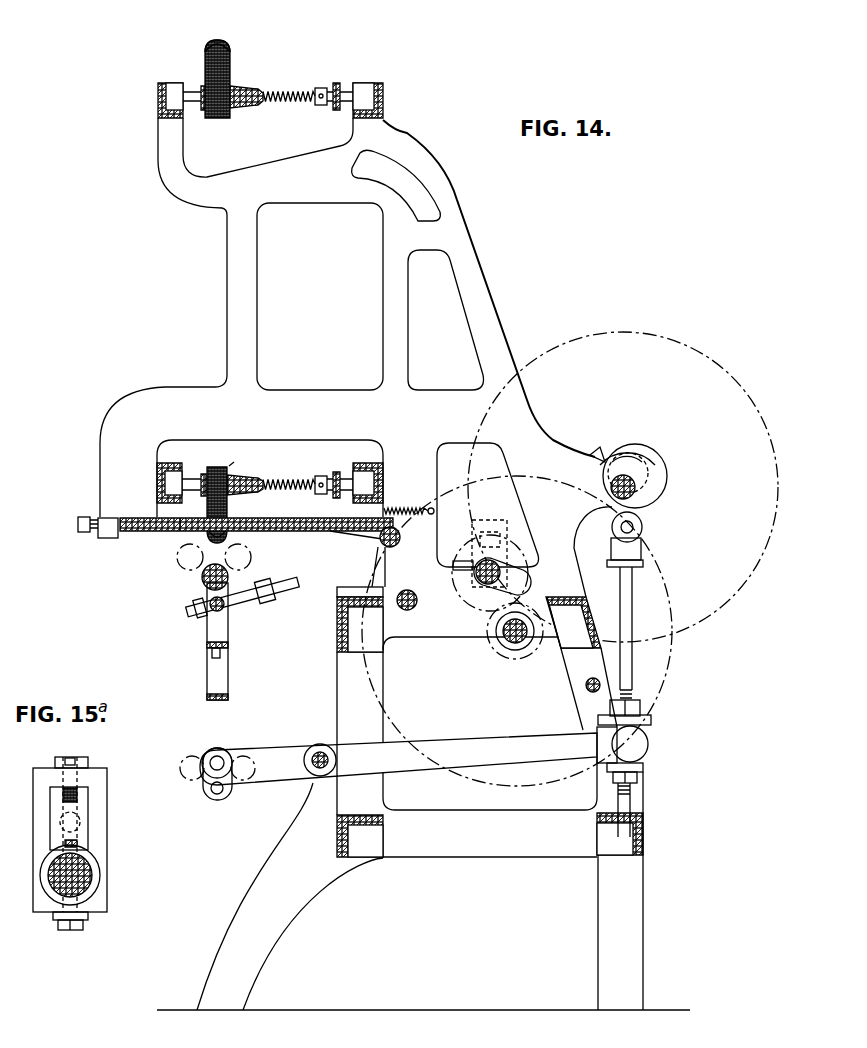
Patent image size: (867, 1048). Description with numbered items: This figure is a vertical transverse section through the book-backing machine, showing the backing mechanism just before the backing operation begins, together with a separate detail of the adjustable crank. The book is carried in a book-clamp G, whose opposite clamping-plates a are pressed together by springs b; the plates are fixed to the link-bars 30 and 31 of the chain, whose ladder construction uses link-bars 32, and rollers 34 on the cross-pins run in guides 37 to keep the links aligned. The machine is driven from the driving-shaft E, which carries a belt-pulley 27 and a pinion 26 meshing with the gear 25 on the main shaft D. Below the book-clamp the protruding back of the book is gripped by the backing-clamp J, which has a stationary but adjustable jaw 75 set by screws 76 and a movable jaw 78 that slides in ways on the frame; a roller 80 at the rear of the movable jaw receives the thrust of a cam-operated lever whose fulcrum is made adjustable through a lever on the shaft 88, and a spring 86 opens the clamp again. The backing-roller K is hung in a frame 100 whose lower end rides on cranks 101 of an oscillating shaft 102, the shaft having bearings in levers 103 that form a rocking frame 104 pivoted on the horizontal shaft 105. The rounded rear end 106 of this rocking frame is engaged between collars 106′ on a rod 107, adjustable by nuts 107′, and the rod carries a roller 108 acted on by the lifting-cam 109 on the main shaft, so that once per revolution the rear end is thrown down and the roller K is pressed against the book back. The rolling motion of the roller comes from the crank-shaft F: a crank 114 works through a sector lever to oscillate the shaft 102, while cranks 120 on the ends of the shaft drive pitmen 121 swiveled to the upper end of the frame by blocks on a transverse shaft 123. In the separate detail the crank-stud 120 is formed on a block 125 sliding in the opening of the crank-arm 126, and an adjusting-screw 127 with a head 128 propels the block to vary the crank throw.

In FIG. 14, the gear 25 is at (778, 507).
In FIG. 14, the pinion 26 is at (535, 648).
In FIG. 14, the belt-pulley 27 is at (655, 705).
In FIG. 14, the link-bar 30 is at (202, 108).
In FIG. 14, the link-bar 31 is at (234, 88).
In FIG. 14, the link-bar 32 is at (336, 103).
In FIG. 14, the rollers 34 is at (270, 293).
In FIG. 14, the guides 37 is at (383, 455).
In FIG. 14, the stationary jaw 75 is at (256, 535).
In FIG. 14, the adjusting screws 76 is at (88, 533).
In FIG. 14, the movable jaw 78 is at (348, 541).
In FIG. 14, the roller 80 is at (380, 542).
In FIG. 14, the spring 86 is at (409, 502).
In FIG. 14, the shaft 88 is at (407, 592).
In FIG. 14, the roller frame 100 is at (228, 660).
In FIG. 14, the cranks 101 is at (232, 798).
In FIG. 14, the oscillating shaft 102 is at (216, 756).
In FIG. 14, the levers 103 is at (233, 762).
In FIG. 14, the rocking frame 104 is at (398, 759).
In FIG. 14, the horizontal shaft 105 is at (316, 746).
In FIG. 14, the rounded rear end 106 is at (648, 744).
In FIG. 14, the collars 106′ is at (640, 735).
In FIG. 14, the rod 107 is at (632, 658).
In FIG. 14, the nuts 107′ is at (640, 708).
In FIG. 14, the roller 108 is at (642, 532).
In FIG. 14, the lifting-cam 109 is at (667, 487).
In FIG. 14, the crank 114 is at (518, 582).
In FIG. 14, the crank-stud 120 is at (490, 530).
In FIG. 15a, the crank-stud 120 is at (60, 823).
In FIG. 14, the pitmen 121 is at (270, 600).
In FIG. 14, the transverse shaft 123 is at (224, 611).
In FIG. 15a, the block 125 is at (80, 800).
In FIG. 15a, the crank-arm 126 is at (107, 825).
In FIG. 15a, the adjusting-screw 127 is at (65, 845).
In FIG. 15a, the head 128 is at (70, 933).
In FIG. 14, the clamping-plates a is at (234, 462).
In FIG. 14, the springs b is at (295, 300).
In FIG. 14, the knob c is at (205, 72).
In FIG. 14, the main shaft D is at (612, 483).
In FIG. 14, the driving-shaft E is at (508, 648).
In FIG. 14, the crank-shaft F is at (478, 582).
In FIG. 15a, the crank-shaft F is at (92, 875).
In FIG. 14, the book-clamp G is at (224, 118).
In FIG. 14, the backing-clamp J is at (240, 532).
In FIG. 14, the backing-roller K is at (200, 584).